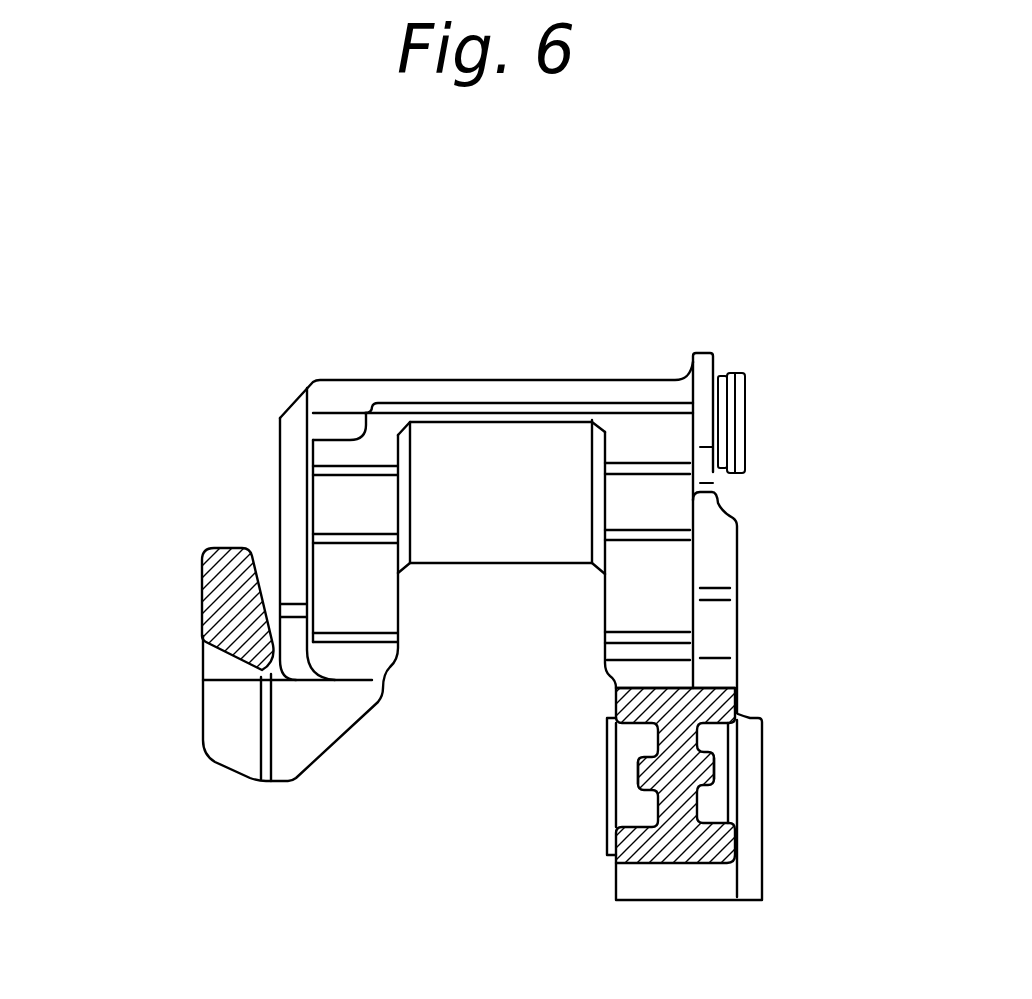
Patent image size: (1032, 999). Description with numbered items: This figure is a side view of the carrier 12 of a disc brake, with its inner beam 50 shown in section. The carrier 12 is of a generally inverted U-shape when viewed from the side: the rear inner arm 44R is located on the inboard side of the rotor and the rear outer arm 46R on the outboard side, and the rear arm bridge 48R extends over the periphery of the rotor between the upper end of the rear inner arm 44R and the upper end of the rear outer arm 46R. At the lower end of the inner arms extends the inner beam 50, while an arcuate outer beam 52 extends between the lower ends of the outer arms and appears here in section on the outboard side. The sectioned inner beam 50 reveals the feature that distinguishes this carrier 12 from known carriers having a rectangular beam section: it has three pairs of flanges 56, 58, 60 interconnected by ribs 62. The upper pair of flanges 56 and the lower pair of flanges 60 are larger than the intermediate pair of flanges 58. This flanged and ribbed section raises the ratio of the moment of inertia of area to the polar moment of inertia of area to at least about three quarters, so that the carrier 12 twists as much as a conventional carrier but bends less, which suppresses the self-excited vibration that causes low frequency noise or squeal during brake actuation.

The carrier 12 is at (772, 384).
The rear inner arm 44R is at (720, 622).
The rear outer arm 46R is at (287, 508).
The rear arm bridge 48R is at (622, 378).
The inner beam 50 is at (733, 822).
The outer beam 52 is at (213, 602).
The upper pair of flanges 56 is at (627, 706).
The intermediate pair of flanges 58 is at (640, 777).
The lower pair of flanges 60 is at (620, 857).
The ribs 62 is at (697, 737).